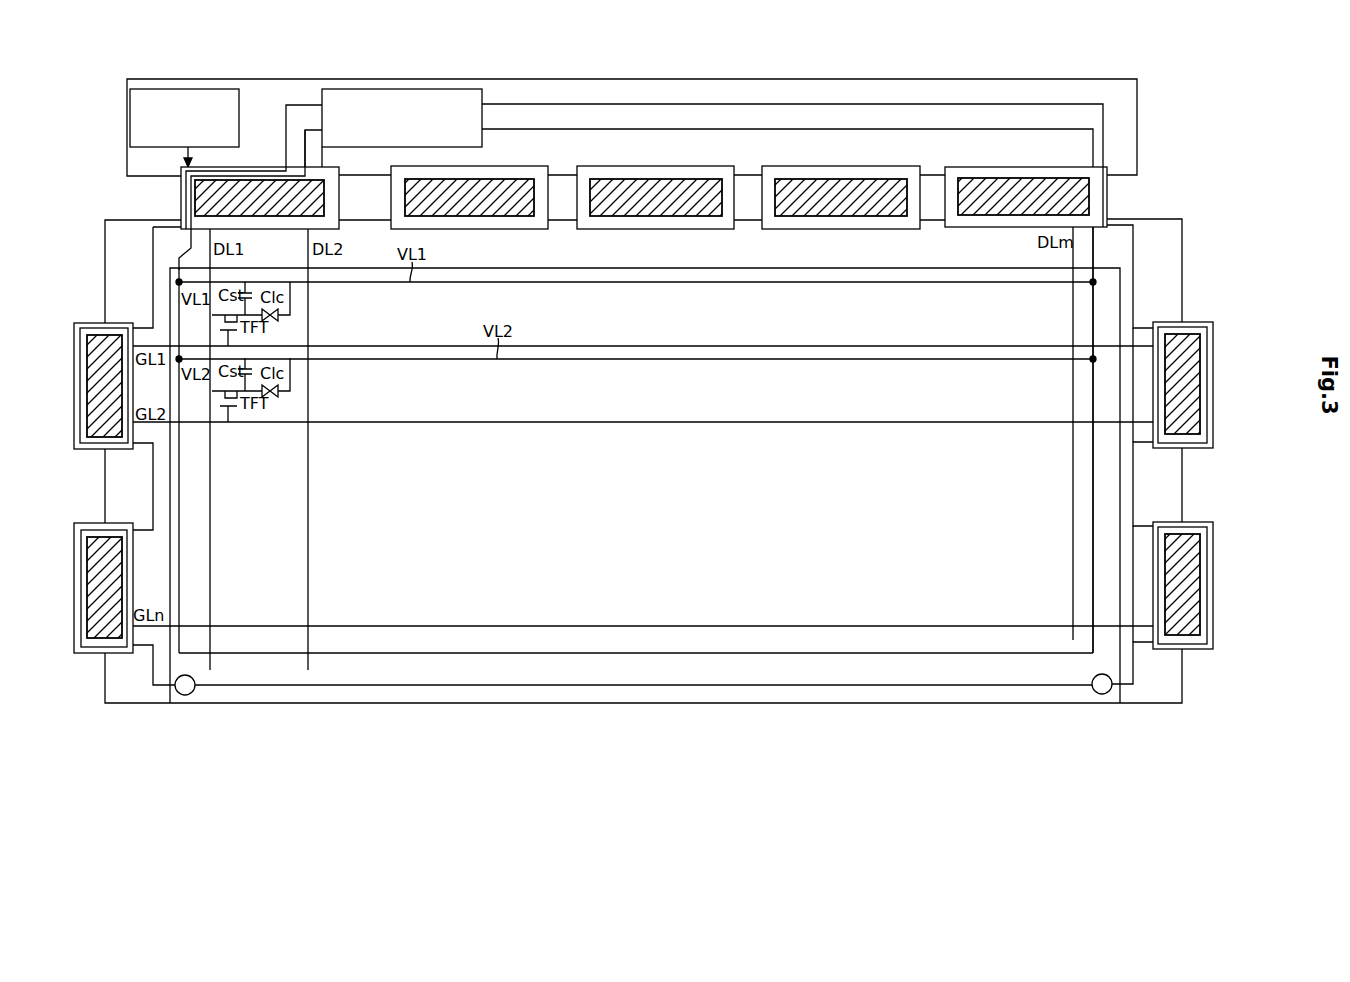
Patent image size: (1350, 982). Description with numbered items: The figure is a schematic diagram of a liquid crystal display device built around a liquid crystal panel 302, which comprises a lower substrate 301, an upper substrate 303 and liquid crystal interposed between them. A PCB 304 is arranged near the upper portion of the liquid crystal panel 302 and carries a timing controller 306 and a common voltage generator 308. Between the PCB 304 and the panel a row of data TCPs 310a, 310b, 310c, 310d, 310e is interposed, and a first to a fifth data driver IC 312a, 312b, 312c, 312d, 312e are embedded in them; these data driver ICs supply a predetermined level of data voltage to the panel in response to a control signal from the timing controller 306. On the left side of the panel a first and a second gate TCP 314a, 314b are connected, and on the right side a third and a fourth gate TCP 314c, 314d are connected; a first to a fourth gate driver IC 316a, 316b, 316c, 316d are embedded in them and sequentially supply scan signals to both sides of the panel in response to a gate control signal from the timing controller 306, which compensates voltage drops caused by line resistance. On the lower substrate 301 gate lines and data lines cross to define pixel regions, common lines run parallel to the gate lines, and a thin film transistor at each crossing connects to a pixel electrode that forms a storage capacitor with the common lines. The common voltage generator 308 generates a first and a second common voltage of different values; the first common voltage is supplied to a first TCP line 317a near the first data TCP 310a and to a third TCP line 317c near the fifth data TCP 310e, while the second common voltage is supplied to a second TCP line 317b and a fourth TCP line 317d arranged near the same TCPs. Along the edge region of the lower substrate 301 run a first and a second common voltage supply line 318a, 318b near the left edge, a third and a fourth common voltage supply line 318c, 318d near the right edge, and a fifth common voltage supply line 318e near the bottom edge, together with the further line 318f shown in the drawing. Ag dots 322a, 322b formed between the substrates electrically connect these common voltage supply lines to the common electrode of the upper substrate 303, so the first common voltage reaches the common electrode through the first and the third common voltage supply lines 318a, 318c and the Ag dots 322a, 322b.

The lower substrate 301 is at (105, 268).
The liquid crystal panel 302 is at (1224, 307).
The upper substrate 303 is at (168, 303).
The PCB 304 is at (1137, 128).
The timing controller 306 is at (188, 79).
The common voltage generator 308 is at (368, 89).
The first data TCP 310a is at (215, 216).
The second data TCP 310b is at (474, 241).
The third data TCP 310c is at (659, 241).
The fourth data TCP 310d is at (845, 241).
The fifth data TCP 310e is at (1068, 216).
The first data driver IC 312a is at (280, 216).
The second data driver IC 312b is at (470, 216).
The third data driver IC 312c is at (655, 216).
The fourth data driver IC 312d is at (855, 216).
The fifth data driver IC 312e is at (1013, 215).
The first gate TCP 314a is at (77, 385).
The second gate TCP 314b is at (76, 580).
The third gate TCP 314c is at (1222, 385).
The fourth gate TCP 314d is at (1223, 585).
The first gate driver IC 316a is at (88, 410).
The second gate driver IC 316b is at (88, 612).
The third gate driver IC 316c is at (1200, 382).
The fourth gate driver IC 316d is at (1200, 583).
The first TCP line 317a is at (297, 103).
The second TCP line 317b is at (312, 130).
The third TCP line 317c is at (587, 103).
The fourth TCP line 317d is at (652, 128).
The first common voltage supply line 318a is at (153, 237).
The second common voltage supply line 318b is at (177, 490).
The third common voltage supply line 318c is at (1133, 503).
The fourth common voltage supply line 318d is at (1092, 465).
The fifth common voltage supply line 318e is at (445, 654).
The common voltage transmission line 318f is at (270, 686).
The Ag dot 322a is at (185, 695).
The Ag dot 322b is at (1102, 694).